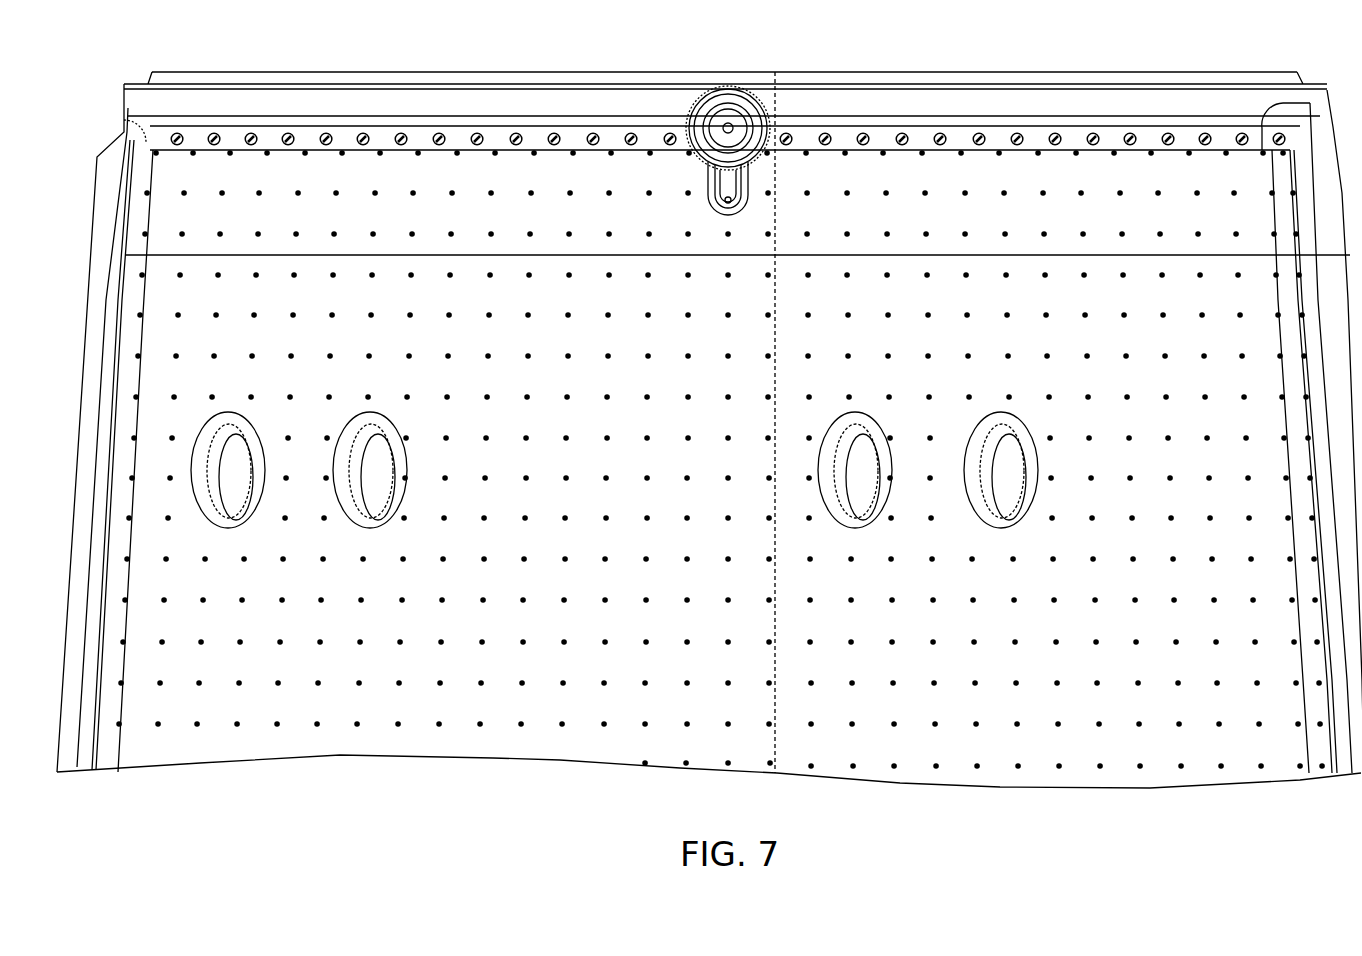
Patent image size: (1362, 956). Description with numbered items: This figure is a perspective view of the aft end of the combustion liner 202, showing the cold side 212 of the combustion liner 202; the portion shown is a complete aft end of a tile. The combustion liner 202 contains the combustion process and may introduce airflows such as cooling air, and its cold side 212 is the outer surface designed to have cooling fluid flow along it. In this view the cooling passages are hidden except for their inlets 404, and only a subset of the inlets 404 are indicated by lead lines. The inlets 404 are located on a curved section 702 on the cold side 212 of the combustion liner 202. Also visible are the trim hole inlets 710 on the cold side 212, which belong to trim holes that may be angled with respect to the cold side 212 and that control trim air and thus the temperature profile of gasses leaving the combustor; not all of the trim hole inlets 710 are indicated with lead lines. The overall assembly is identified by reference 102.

The vehicle tailgate panel assembly 102 is at (124, 799).
The combustion liner 202 is at (961, 752).
The cold side 212 is at (490, 748).
The inlets 404 is at (326, 146).
The curved section 702 is at (458, 158).
The trim hole inlets 710 is at (569, 192).